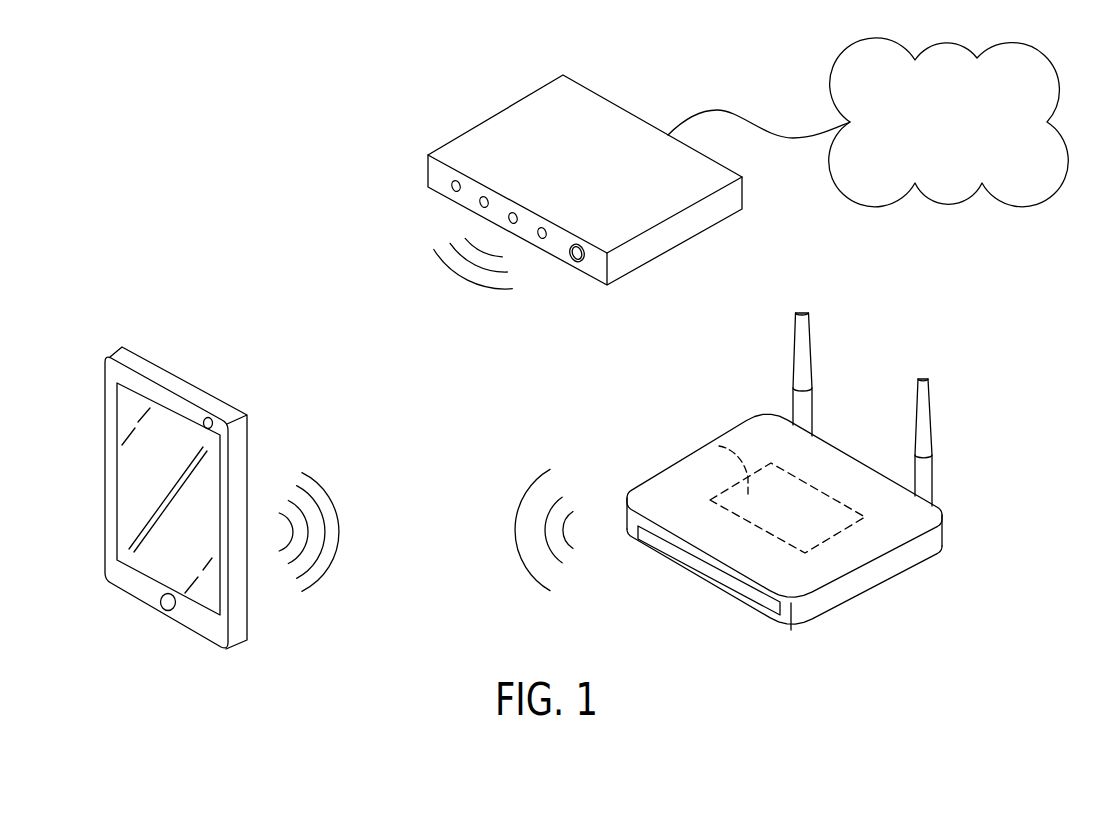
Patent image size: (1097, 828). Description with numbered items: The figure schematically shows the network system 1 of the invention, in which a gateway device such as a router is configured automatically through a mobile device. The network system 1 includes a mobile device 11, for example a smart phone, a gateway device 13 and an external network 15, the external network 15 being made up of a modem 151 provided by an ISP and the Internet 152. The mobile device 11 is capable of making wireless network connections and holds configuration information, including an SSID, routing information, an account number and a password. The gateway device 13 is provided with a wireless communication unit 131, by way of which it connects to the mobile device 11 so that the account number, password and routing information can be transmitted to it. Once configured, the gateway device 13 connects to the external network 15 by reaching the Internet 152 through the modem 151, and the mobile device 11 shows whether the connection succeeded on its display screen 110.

The network system 1 is at (139, 228).
The mobile device 11 is at (89, 479).
The display screen 110 is at (175, 413).
The gateway device 13 is at (957, 511).
The wireless communication unit 131 is at (712, 438).
The external network 15 is at (843, 246).
The modem 151 is at (461, 116).
The Internet 152 is at (832, 58).